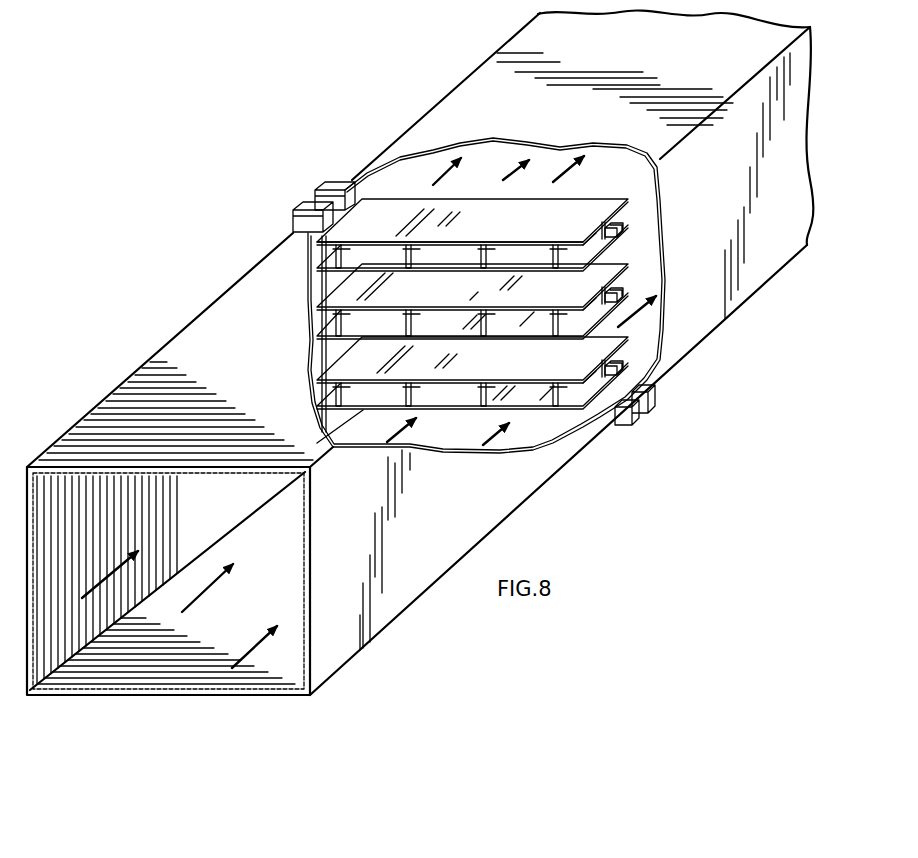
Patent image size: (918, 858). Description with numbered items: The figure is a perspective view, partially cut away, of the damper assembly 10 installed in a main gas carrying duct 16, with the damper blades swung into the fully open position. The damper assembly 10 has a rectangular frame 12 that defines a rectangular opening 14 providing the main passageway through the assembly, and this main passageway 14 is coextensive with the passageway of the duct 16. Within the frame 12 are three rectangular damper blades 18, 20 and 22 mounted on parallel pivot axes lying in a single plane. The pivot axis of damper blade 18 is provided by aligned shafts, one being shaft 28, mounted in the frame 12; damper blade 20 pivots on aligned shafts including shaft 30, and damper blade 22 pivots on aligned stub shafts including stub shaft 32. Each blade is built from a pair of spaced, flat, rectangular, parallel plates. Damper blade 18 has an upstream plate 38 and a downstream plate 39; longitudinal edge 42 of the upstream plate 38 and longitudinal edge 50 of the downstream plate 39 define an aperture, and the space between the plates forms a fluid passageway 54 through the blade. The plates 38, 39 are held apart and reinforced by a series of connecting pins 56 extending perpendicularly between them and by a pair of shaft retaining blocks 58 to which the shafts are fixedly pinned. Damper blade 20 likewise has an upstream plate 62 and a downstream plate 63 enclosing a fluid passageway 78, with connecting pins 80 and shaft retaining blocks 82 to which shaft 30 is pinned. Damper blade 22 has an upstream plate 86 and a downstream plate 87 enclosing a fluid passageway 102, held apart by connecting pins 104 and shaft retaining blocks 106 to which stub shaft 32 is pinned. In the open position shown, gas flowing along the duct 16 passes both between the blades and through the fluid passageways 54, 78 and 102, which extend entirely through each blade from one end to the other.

The damper assembly 10 is at (483, 300).
The rectangular frame 12 is at (290, 221).
The rectangular opening 14 is at (330, 246).
The main gas carrying duct 16 is at (470, 84).
The damper blade 18 is at (506, 213).
The damper blade 20 is at (480, 315).
The damper blade 22 is at (463, 387).
The shaft 28 is at (630, 225).
The shaft 30 is at (622, 328).
The stub shaft 32 is at (600, 373).
The upstream plate 38 is at (405, 212).
The downstream plate 39 is at (545, 256).
The longitudinal edge 42 is at (387, 265).
The longitudinal edge 50 is at (500, 242).
The fluid passageway 54 is at (459, 257).
The connecting pins 56 is at (484, 290).
The shaft retaining blocks 58 is at (590, 232).
The upstream plate 62 is at (421, 299).
The downstream plate 63 is at (516, 318).
The fluid passageway 78 is at (460, 325).
The connecting pins 80 is at (404, 328).
The shaft retaining blocks 82 is at (592, 312).
The upstream plate 86 is at (545, 398).
The downstream plate 87 is at (524, 371).
The fluid passageway 102 is at (432, 396).
The connecting pins 104 is at (478, 394).
The shaft retaining blocks 106 is at (591, 380).